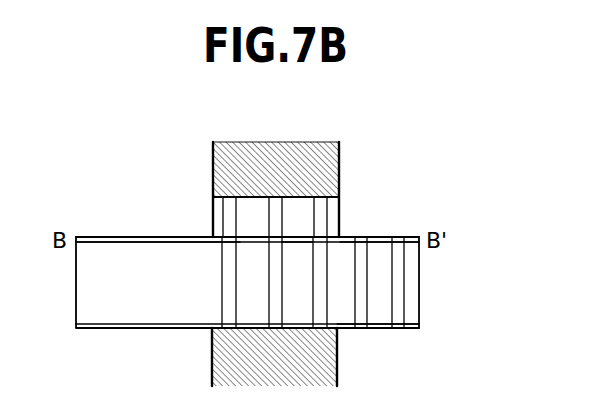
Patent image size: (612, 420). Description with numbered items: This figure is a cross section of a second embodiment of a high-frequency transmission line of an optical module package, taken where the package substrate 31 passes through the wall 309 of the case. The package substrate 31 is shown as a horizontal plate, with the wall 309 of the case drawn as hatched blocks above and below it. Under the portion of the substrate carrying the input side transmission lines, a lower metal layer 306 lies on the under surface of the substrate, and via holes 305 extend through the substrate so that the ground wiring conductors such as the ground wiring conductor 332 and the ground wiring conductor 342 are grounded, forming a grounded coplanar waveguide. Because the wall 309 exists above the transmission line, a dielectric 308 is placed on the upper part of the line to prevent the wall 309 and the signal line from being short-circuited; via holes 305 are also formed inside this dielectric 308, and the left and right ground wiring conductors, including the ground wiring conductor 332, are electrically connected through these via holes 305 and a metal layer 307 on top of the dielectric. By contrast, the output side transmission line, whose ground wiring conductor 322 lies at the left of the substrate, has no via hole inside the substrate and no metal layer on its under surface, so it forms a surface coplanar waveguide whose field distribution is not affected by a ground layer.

The package substrate 31 is at (98, 292).
The via hole 305 is at (280, 215).
The lower metal layer 306 is at (348, 330).
The metal layer 307 is at (237, 192).
The dielectric 308 is at (250, 225).
The wall 309 is at (223, 153).
The ground wiring conductor 322 is at (158, 237).
The ground wiring conductor 332 is at (297, 235).
The ground wiring conductor 342 is at (393, 237).